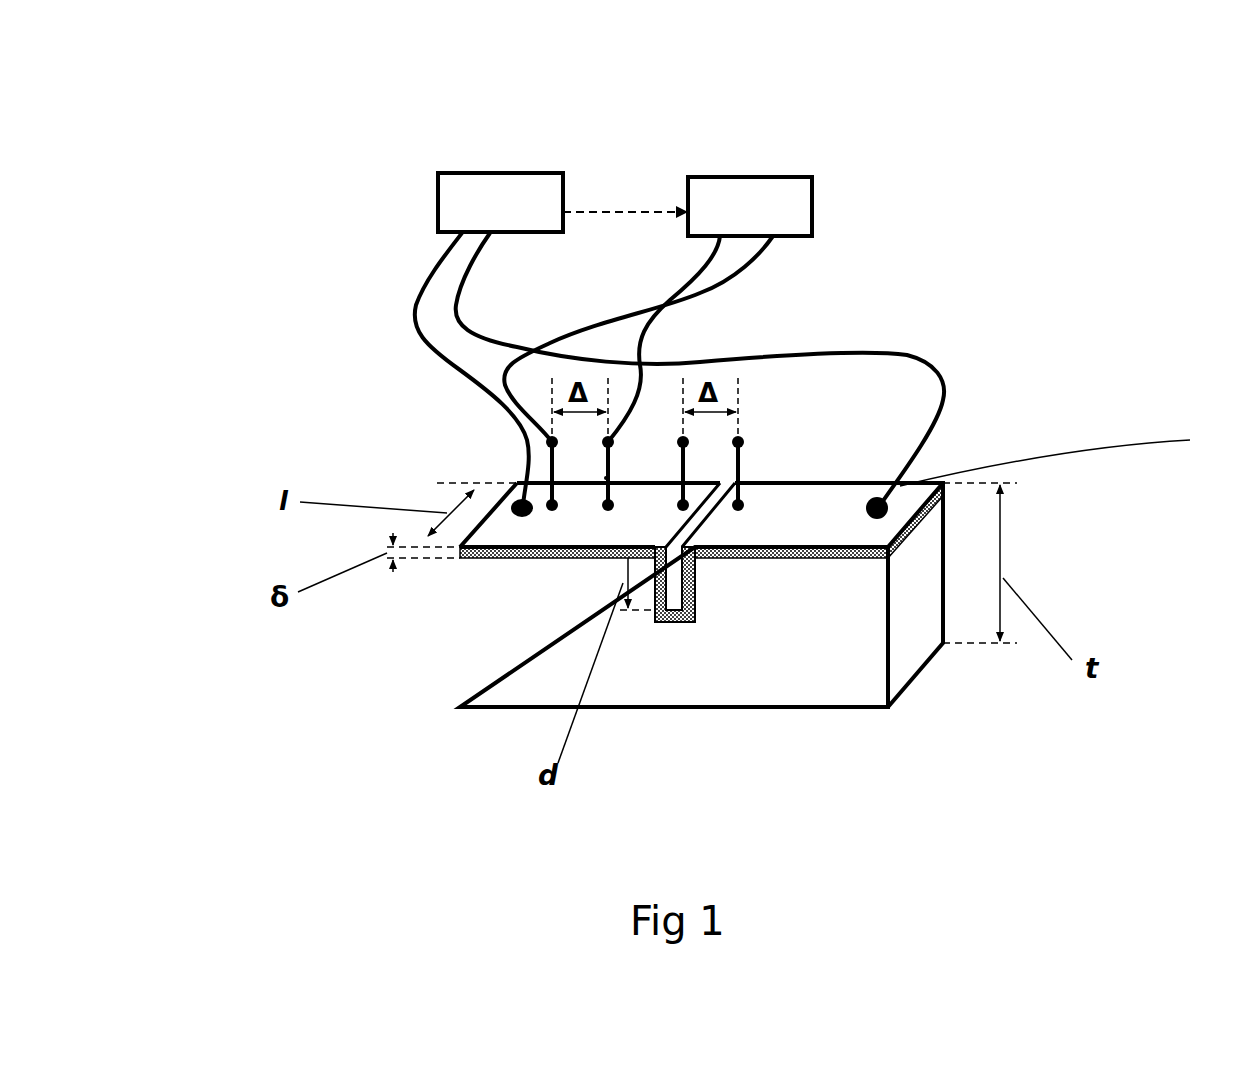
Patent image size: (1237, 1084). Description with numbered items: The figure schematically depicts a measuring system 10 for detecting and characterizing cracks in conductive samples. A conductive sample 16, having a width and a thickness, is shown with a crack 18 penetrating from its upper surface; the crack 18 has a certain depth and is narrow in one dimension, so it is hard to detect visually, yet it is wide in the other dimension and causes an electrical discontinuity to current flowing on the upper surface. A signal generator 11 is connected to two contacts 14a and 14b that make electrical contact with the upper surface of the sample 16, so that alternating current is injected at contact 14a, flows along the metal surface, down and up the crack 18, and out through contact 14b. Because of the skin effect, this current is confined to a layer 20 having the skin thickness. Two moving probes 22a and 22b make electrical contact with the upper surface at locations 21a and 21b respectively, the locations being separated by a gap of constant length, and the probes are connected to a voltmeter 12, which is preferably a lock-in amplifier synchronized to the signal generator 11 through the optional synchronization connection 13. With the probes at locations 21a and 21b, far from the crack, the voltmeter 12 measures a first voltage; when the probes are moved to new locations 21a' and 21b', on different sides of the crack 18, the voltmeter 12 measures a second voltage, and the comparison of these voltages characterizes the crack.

The measuring system 10 is at (970, 188).
The signal generator 11 is at (441, 183).
The voltmeter 12 is at (784, 176).
The synchronization connection 13 is at (610, 211).
The contact 14a is at (513, 487).
The contact 14b is at (943, 483).
The sample 16 is at (903, 633).
The crack 18 is at (668, 573).
The layer 20 is at (520, 549).
The location 21a is at (542, 509).
The location 21b is at (528, 531).
The new location 21a' is at (802, 652).
The new location 21b' is at (848, 630).
The moving probe 22a is at (552, 462).
The moving probe 22b is at (604, 478).